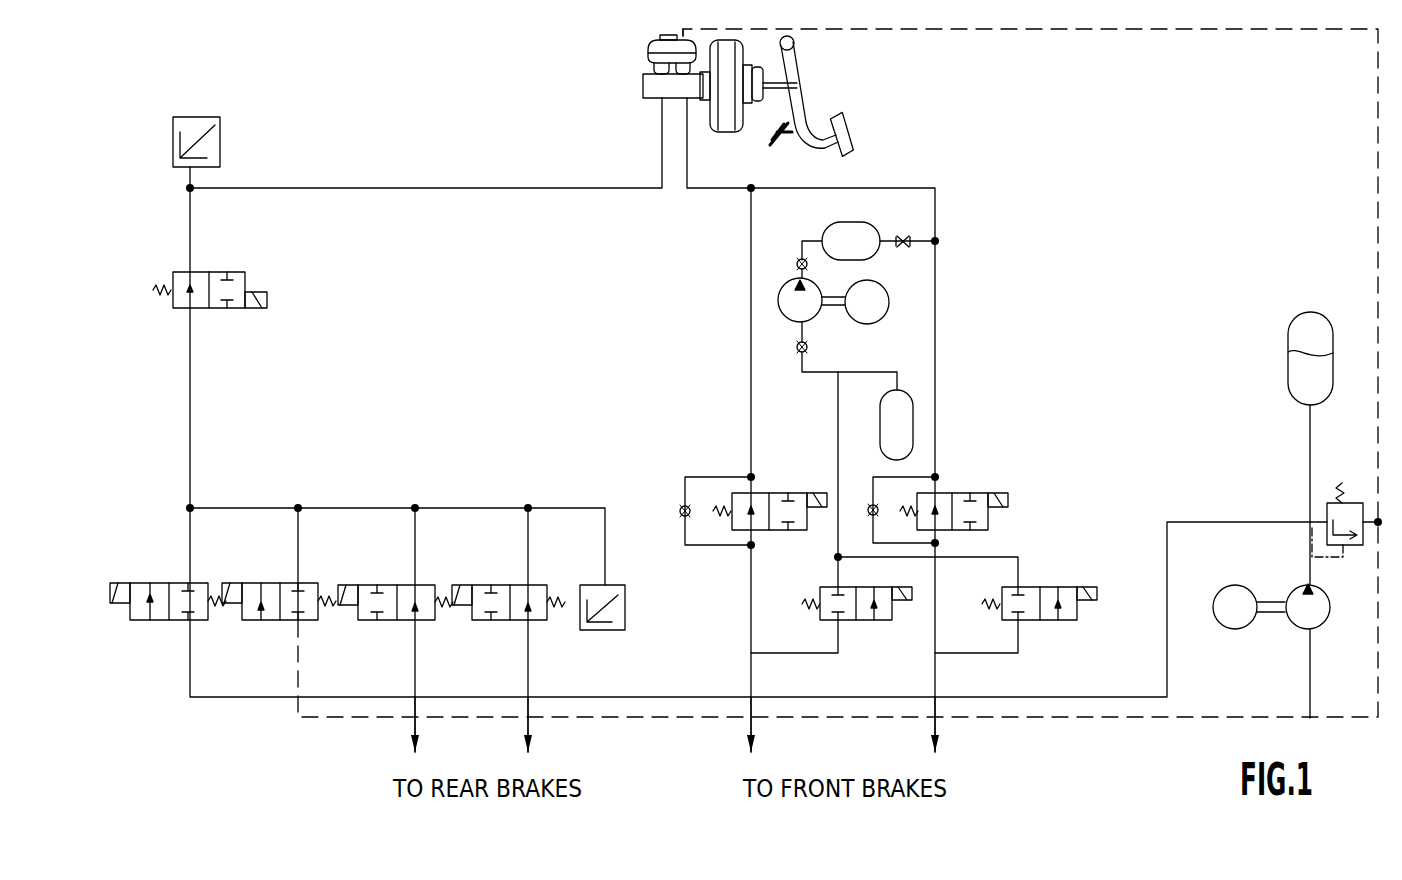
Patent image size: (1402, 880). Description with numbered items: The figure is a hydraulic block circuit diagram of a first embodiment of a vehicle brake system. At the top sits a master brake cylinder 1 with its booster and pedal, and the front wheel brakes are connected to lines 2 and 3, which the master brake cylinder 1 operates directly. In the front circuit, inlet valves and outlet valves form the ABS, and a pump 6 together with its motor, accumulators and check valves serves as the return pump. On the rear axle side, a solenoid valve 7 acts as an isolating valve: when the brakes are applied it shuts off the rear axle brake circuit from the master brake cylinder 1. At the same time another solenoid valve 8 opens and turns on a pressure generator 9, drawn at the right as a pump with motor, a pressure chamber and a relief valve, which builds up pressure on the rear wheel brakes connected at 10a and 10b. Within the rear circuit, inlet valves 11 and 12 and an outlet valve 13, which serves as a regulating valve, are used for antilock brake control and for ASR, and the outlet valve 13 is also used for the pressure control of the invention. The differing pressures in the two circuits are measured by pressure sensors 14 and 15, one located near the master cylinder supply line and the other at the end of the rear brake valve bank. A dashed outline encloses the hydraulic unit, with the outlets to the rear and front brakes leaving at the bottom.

The master brake cylinder 1 is at (643, 88).
The line 2 is at (946, 730).
The line 3 is at (763, 730).
The pump 6 is at (897, 332).
The solenoid valve 7 is at (243, 277).
The solenoid valve 8 is at (145, 622).
The pressure generator 9 is at (1295, 545).
The rear wheel brake connection 10a is at (442, 730).
The rear wheel brake connection 10b is at (556, 730).
The inlet valve 11 is at (428, 587).
The inlet valve 12 is at (540, 587).
The outlet valve 13 is at (310, 585).
The pressure sensor 14 is at (210, 115).
The pressure sensor 15 is at (623, 628).